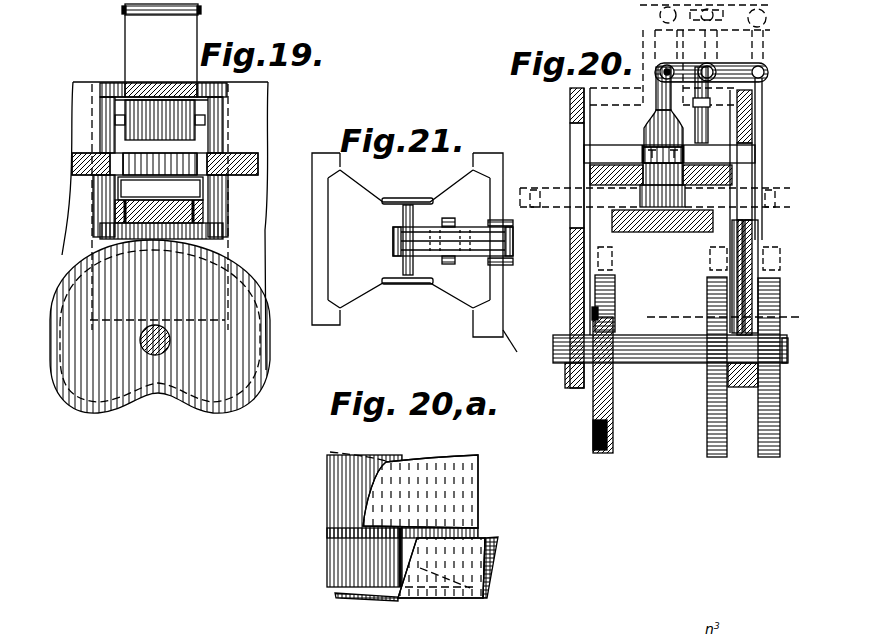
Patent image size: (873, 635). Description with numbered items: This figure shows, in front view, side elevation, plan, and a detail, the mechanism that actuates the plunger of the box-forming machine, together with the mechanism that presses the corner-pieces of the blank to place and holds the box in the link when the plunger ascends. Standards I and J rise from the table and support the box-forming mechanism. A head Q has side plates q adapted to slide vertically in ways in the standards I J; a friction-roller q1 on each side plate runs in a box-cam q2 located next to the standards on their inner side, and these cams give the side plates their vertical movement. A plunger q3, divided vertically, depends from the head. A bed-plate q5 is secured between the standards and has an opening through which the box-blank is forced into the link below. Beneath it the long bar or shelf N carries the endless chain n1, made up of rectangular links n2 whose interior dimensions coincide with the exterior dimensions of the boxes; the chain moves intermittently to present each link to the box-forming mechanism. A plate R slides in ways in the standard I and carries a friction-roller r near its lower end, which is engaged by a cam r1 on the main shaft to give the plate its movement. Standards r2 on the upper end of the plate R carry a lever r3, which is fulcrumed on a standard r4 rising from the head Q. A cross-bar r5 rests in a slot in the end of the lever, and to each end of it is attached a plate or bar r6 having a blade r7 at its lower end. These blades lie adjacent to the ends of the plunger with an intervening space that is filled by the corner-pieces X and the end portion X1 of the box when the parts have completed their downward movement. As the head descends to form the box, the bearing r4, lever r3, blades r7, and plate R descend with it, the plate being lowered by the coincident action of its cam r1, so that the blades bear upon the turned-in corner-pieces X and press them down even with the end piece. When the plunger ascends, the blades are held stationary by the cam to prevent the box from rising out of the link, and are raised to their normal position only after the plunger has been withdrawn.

In FIG. 19, the plate or bar r6 is at (213, 22).
In FIG. 20, the plate or bar r6 is at (663, 92).
In FIG. 19, the cross-bar r5 is at (137, 17).
In FIG. 21, the cross-bar r5 is at (403, 265).
In FIG. 20, the cross-bar r5 is at (665, 70).
In FIG. 19, the head Q is at (110, 82).
In FIG. 21, the head Q is at (348, 293).
In FIG. 20, the head Q is at (612, 154).
In FIG. 19, the plunger q3 is at (130, 125).
In FIG. 20a, the plunger q3 is at (330, 497).
In FIG. 19, the blade r7 is at (203, 122).
In FIG. 20a, the blade r7 is at (465, 490).
In FIG. 20, the blade r7 is at (650, 110).
In FIG. 19, the bed-plate q5 is at (260, 163).
In FIG. 20, the bed-plate q5 is at (732, 172).
In FIG. 19, the link n2 is at (205, 191).
In FIG. 19, the bar or shelf N is at (117, 213).
In FIG. 20, the bar or shelf N is at (788, 233).
In FIG. 19, the side plate q is at (217, 222).
In FIG. 20, the side plate q is at (710, 227).
In FIG. 19, the standard J is at (258, 230).
In FIG. 21, the standard J is at (320, 323).
In FIG. 20, the standard J is at (570, 107).
In FIG. 19, the friction-roller q1 is at (160, 253).
In FIG. 20, the friction-roller q1 is at (615, 313).
In FIG. 19, the box-cam q2 is at (192, 413).
In FIG. 20, the box-cam q2 is at (703, 402).
In FIG. 21, the lever r3 is at (393, 253).
In FIG. 20, the lever r3 is at (738, 68).
In FIG. 21, the standard r4 is at (460, 258).
In FIG. 20, the standard r4 is at (702, 110).
In FIG. 21, the standard r2 is at (507, 256).
In FIG. 20, the standard r2 is at (760, 76).
In FIG. 21, the plate R is at (498, 282).
In FIG. 20, the plate R is at (753, 160).
In FIG. 21, the standard I is at (512, 350).
In FIG. 20, the standard I is at (766, 77).
In FIG. 20a, the corner-piece X is at (487, 537).
In FIG. 20a, the end portion X1 is at (414, 600).
In FIG. 20, the endless chain n1 is at (660, 196).
In FIG. 20, the friction-roller r is at (777, 302).
In FIG. 20, the cam r1 is at (780, 433).